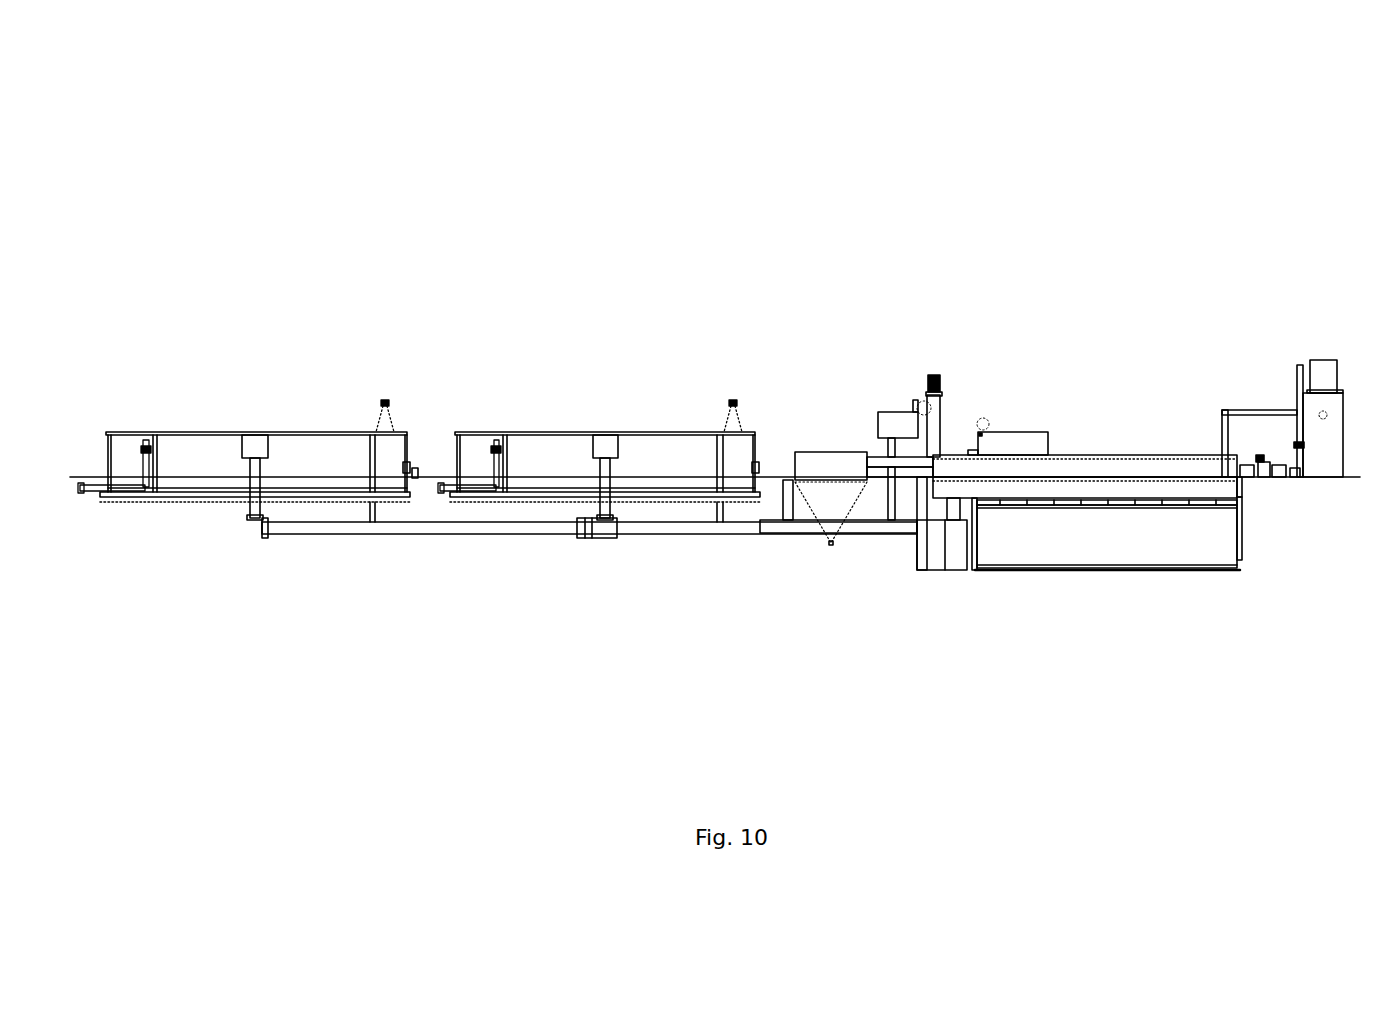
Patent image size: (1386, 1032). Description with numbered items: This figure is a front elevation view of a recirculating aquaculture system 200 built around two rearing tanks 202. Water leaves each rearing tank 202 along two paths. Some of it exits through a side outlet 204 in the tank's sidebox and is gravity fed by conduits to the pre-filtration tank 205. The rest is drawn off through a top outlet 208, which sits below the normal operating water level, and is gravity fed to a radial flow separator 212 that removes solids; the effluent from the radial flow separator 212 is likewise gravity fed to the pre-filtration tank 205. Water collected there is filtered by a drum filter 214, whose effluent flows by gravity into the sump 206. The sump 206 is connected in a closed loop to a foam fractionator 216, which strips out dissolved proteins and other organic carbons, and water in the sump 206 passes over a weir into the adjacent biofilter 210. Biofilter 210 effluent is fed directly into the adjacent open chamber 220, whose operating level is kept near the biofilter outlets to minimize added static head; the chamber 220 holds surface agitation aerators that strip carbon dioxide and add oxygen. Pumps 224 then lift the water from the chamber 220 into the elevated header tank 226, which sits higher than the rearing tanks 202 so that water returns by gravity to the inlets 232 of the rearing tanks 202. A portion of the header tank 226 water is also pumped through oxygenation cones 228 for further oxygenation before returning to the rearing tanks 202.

The recirculating aquaculture system 200 is at (724, 207).
The rearing tank 202 is at (215, 430).
The side outlet 204 is at (250, 460).
The pre-filtration tank 205 is at (947, 453).
The sump 206 is at (1120, 453).
The top outlet 208 is at (372, 430).
The biofilter 210 is at (1073, 570).
The radial flow separator 212 is at (832, 450).
The drum filter 214 is at (1022, 430).
The foam fractionator 216 is at (1325, 477).
The chamber 220 is at (948, 570).
The pump 224 is at (932, 373).
The header tank 226 is at (893, 410).
The oxygenation cone 228 is at (387, 408).
The inlet 232 is at (147, 443).